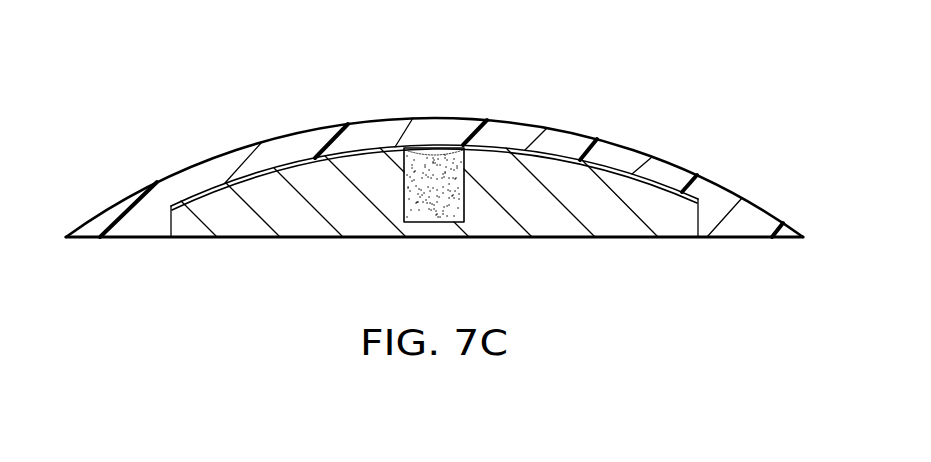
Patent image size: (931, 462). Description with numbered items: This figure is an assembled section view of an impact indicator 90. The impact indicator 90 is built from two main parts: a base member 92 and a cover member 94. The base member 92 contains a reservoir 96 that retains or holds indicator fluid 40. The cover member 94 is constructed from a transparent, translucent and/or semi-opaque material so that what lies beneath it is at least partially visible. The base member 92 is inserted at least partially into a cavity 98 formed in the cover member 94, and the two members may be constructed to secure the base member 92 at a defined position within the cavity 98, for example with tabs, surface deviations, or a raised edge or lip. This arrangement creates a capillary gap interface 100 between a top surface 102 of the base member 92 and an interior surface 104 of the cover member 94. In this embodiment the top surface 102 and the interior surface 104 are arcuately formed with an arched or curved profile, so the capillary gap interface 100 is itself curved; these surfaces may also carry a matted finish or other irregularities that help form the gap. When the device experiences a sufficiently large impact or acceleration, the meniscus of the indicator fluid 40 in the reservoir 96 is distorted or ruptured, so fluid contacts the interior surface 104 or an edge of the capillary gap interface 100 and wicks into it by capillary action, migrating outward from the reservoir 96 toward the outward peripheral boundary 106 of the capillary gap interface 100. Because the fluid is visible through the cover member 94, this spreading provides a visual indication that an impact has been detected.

The impact indicator 90 is at (212, 66).
The indicator fluid 40 is at (423, 160).
The base member 92 is at (262, 240).
The cover member 94 is at (617, 142).
The reservoir 96 is at (433, 222).
The cavity 98 is at (690, 222).
The capillary gap interface 100 is at (348, 150).
The top surface 102 is at (500, 150).
The interior surface 104 is at (213, 184).
The outward peripheral boundary 106 is at (698, 198).